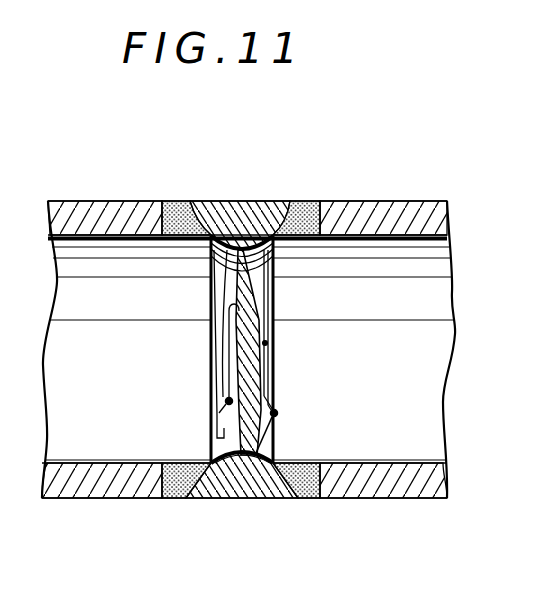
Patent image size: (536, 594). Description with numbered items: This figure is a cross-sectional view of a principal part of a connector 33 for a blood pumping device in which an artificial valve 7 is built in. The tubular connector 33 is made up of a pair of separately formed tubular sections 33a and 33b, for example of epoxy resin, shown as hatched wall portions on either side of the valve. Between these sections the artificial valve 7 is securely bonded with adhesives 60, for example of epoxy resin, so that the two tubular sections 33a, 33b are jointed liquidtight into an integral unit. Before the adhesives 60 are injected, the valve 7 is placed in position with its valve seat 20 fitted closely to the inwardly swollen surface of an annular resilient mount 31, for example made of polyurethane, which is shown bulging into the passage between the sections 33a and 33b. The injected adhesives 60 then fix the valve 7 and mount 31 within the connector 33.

The connector 33 is at (405, 201).
The tubular section 33a is at (107, 224).
The tubular section 33b is at (371, 223).
The adhesives 60 is at (173, 212).
The annular resilient mount 31 is at (235, 215).
The valve seat 20 is at (277, 248).
The artificial valve 7 is at (277, 347).